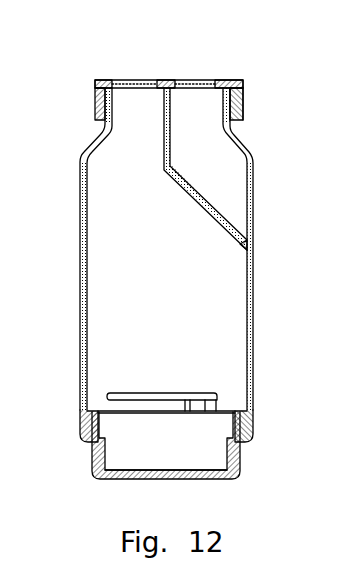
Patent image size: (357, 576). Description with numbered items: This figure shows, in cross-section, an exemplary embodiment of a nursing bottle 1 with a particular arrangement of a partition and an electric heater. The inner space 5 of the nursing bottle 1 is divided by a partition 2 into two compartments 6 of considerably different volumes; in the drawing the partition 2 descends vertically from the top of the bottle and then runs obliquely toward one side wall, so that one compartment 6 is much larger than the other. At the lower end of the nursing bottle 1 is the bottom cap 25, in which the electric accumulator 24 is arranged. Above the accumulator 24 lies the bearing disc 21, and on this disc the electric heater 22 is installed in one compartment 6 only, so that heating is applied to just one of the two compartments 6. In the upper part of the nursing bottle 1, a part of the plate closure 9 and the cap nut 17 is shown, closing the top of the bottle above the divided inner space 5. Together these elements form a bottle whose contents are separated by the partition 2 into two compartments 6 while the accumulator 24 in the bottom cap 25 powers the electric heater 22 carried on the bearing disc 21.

The nursing bottle 1 is at (256, 160).
The partition 2 is at (183, 190).
The inner space 5 is at (226, 298).
The compartments 6 is at (135, 283).
The plate closure 9 is at (150, 80).
The cap nut 17 is at (243, 92).
The bearing disc 21 is at (228, 411).
The electric heater 22 is at (122, 392).
The electric accumulator 24 is at (123, 453).
The bottom cap 25 is at (243, 460).